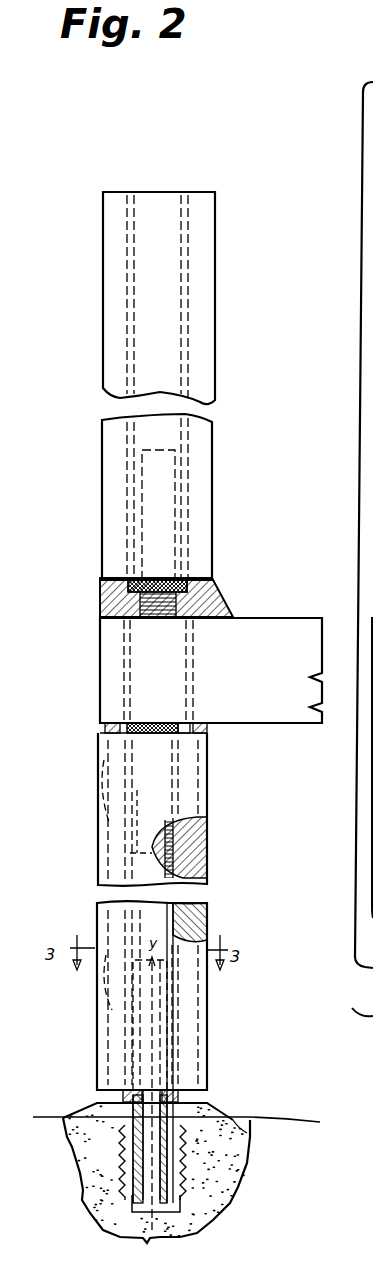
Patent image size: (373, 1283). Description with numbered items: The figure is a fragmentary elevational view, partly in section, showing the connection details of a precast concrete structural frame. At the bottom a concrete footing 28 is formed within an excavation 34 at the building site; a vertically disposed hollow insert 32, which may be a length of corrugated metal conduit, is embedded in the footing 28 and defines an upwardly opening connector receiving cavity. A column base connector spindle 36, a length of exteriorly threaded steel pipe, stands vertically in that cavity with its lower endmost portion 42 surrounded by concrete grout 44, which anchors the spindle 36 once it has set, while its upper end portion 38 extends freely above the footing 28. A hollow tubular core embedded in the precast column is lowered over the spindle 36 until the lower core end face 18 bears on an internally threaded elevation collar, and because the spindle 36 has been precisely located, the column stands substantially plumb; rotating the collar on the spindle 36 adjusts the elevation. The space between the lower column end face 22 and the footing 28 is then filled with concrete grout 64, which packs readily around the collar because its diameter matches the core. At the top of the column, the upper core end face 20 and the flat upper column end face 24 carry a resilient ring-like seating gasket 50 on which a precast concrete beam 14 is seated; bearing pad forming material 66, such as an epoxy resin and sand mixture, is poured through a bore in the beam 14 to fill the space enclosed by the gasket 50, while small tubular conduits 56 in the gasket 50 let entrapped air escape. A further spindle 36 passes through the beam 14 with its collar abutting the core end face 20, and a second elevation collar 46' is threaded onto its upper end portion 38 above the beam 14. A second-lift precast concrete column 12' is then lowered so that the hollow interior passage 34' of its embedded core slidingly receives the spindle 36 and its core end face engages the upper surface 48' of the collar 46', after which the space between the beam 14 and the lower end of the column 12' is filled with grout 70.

The precast concrete column 12' is at (179, 298).
The upper inner passage 34' is at (201, 515).
The second elevation collar 46' is at (129, 599).
The grout 70 is at (250, 587).
The tubular conduits 56 is at (372, 617).
The precast concrete beam 14 is at (288, 722).
The core end face 20 is at (128, 722).
The seating gasket 50 is at (100, 729).
The bearing pad forming material 66 is at (197, 727).
The column end face 24 is at (207, 728).
The upper end portion 38 is at (168, 978).
The column end face 22 is at (210, 1095).
The core end face 18 is at (93, 1090).
The concrete grout 64 is at (215, 1118).
The excavation 34 is at (270, 1104).
The upper surface 48' is at (194, 1124).
The hollow insert 32 is at (67, 1132).
The concrete footing 28 is at (90, 1160).
The concrete grout 44 is at (180, 1150).
The lower endmost portion 42 is at (170, 1202).
The column base connector spindle 36 is at (137, 1183).